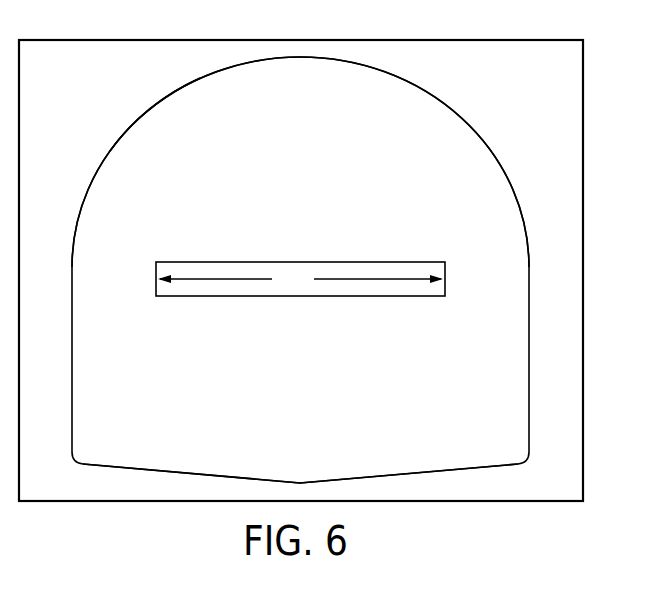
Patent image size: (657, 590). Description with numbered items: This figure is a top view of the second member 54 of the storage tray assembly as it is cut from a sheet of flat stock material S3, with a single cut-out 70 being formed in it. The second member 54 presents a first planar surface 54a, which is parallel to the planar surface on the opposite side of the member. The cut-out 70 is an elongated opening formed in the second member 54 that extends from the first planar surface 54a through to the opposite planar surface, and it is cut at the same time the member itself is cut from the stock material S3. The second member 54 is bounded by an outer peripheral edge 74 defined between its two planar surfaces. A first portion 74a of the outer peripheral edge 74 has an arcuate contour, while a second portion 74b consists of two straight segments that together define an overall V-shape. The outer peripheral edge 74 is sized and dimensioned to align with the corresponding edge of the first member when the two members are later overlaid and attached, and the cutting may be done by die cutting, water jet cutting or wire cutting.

The sheet / film segment S3 is at (557, 39).
The second member 54 is at (484, 134).
The first planar surface 54a is at (470, 212).
The cut-out 70 is at (240, 262).
The outer peripheral edge 74 is at (110, 151).
The first portion of the outer peripheral edge 74a is at (140, 118).
The second portion of the outer peripheral edge 74b is at (125, 470).